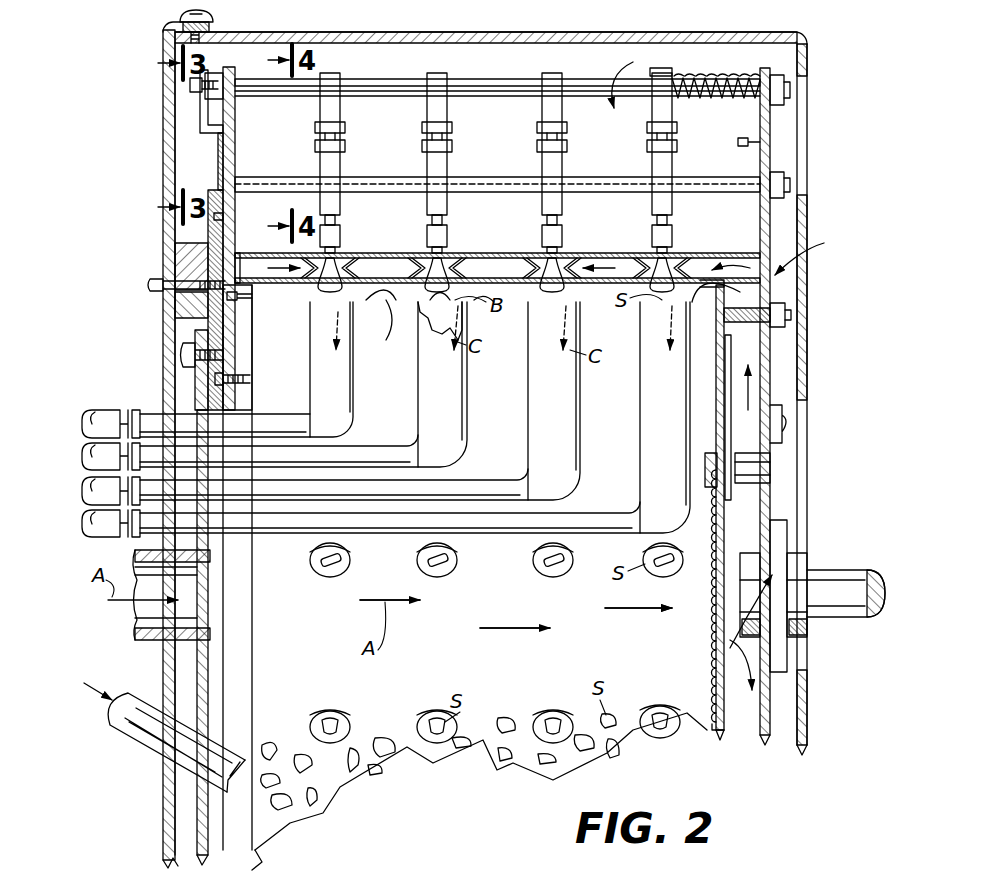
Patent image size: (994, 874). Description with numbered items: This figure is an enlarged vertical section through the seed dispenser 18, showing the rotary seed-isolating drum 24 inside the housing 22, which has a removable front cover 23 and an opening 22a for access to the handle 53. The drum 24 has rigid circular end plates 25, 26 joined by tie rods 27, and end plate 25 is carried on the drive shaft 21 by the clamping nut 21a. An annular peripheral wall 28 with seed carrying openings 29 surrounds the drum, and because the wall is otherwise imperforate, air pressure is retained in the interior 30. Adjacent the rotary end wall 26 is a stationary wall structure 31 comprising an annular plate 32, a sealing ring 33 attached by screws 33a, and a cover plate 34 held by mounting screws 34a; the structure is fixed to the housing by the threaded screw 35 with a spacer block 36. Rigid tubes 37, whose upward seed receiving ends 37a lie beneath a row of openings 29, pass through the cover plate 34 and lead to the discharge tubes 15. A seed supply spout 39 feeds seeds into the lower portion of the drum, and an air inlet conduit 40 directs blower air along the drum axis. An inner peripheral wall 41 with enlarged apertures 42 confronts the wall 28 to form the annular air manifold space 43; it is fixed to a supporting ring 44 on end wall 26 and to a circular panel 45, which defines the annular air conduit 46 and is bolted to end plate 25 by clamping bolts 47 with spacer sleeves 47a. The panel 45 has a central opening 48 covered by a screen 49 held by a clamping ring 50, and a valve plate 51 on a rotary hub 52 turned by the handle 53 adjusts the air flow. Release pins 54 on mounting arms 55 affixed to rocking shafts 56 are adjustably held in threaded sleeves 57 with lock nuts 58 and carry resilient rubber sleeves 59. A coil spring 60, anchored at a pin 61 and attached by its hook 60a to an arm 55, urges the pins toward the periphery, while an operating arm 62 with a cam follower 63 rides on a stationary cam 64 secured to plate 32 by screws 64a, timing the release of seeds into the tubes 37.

The discharge tubes 15 is at (98, 426).
The seed dispenser 18 is at (812, 26).
The shaft 21 is at (862, 583).
The clamping nut 21a is at (795, 563).
The housing 22 is at (808, 210).
The opening 22a is at (809, 386).
The front cover 23 is at (176, 352).
The rotary seed-isolating drum 24 is at (776, 260).
The end plate 25 is at (771, 163).
The end plate 26 is at (236, 112).
The tie rods 27 is at (384, 178).
The peripheral wall 28 is at (594, 257).
The seed carrying openings 29 is at (688, 260).
The interior 30 is at (514, 688).
The stationary wall structure 31 is at (208, 185).
The annular plate 32 is at (196, 330).
The sealing ring 33 is at (245, 357).
The screws 33a is at (248, 386).
The cover plate 34 is at (196, 384).
The mounting screws 34a is at (184, 352).
The threaded screw 35 is at (176, 284).
The spacer block 36 is at (176, 258).
The rigid tubes 37 is at (498, 482).
The seed receiving ends 37a is at (352, 418).
The seed supply spout 39 is at (145, 758).
The air inlet conduit 40 is at (143, 641).
The inner peripheral wall 41 is at (381, 316).
The apertures 42 is at (450, 572).
The annular air manifold space 43 is at (626, 262).
The supporting ring 44 is at (248, 297).
The circular panel 45 is at (716, 379).
The annular air conduit 46 is at (771, 352).
The clamping bolts 47 is at (792, 318).
The spacer sleeves 47a is at (772, 292).
The opening 48 is at (710, 688).
The screen 49 is at (710, 625).
The clamping ring 50 is at (711, 455).
The valve plate 51 is at (726, 407).
The rotary hub 52 is at (771, 470).
The handle 53 is at (784, 428).
The release pins 54 is at (430, 262).
The mounting arms 55 is at (440, 73).
The shafts 56 is at (496, 80).
The threaded sleeve 57 is at (450, 165).
The lock nuts 58 is at (568, 147).
The resilient rubber sleeve 59 is at (449, 235).
The coil spring 60 is at (730, 100).
The hook 60a is at (670, 70).
The pin 61 is at (744, 148).
The operating arm 62 is at (190, 85).
The cam follower 63 is at (202, 128).
The stationary cam 64 is at (218, 150).
The screws 64a is at (214, 217).